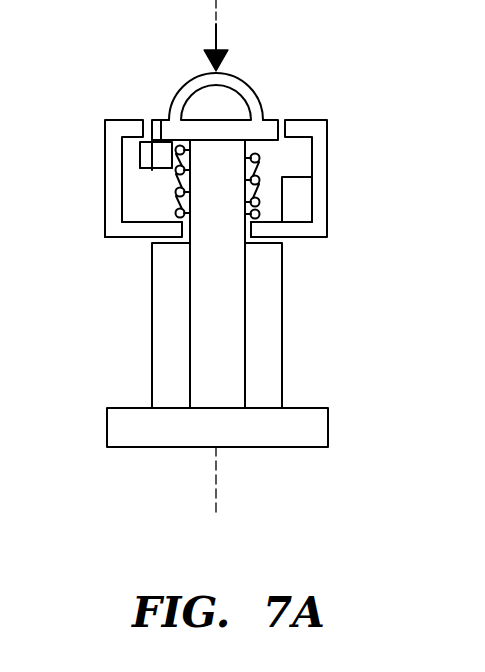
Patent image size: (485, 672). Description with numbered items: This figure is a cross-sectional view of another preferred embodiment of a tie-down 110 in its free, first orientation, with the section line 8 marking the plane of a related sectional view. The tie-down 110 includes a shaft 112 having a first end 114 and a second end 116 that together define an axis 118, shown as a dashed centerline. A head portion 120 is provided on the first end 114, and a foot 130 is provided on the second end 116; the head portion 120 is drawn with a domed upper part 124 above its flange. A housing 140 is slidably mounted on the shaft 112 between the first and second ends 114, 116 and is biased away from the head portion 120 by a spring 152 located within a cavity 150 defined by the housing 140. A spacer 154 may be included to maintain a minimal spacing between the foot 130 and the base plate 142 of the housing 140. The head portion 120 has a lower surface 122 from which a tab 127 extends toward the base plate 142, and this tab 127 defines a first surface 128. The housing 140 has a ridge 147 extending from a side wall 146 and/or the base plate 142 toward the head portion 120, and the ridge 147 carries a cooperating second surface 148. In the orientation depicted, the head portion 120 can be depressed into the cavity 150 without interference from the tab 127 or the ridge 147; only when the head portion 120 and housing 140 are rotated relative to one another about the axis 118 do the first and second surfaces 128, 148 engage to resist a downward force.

The section line 8- 8 is at (68, 195).
The tie-down 110 is at (390, 116).
The shaft 112 is at (252, 305).
The first end 114 is at (161, 120).
The second end 116 is at (247, 383).
The axis 118 is at (214, 33).
The head portion 120 is at (273, 108).
The lower surface 122 is at (288, 139).
The dome 124 is at (240, 90).
The tab 127 is at (163, 152).
The first surface 128 is at (160, 173).
The foot 130 is at (336, 408).
The housing 140 is at (332, 223).
The base plate 142 is at (293, 232).
The side wall 146 is at (105, 224).
The ridge 147 is at (298, 207).
The second surface 148 is at (302, 177).
The cavity 150 is at (142, 210).
The spring 152 is at (259, 183).
The spacer 154 is at (283, 325).